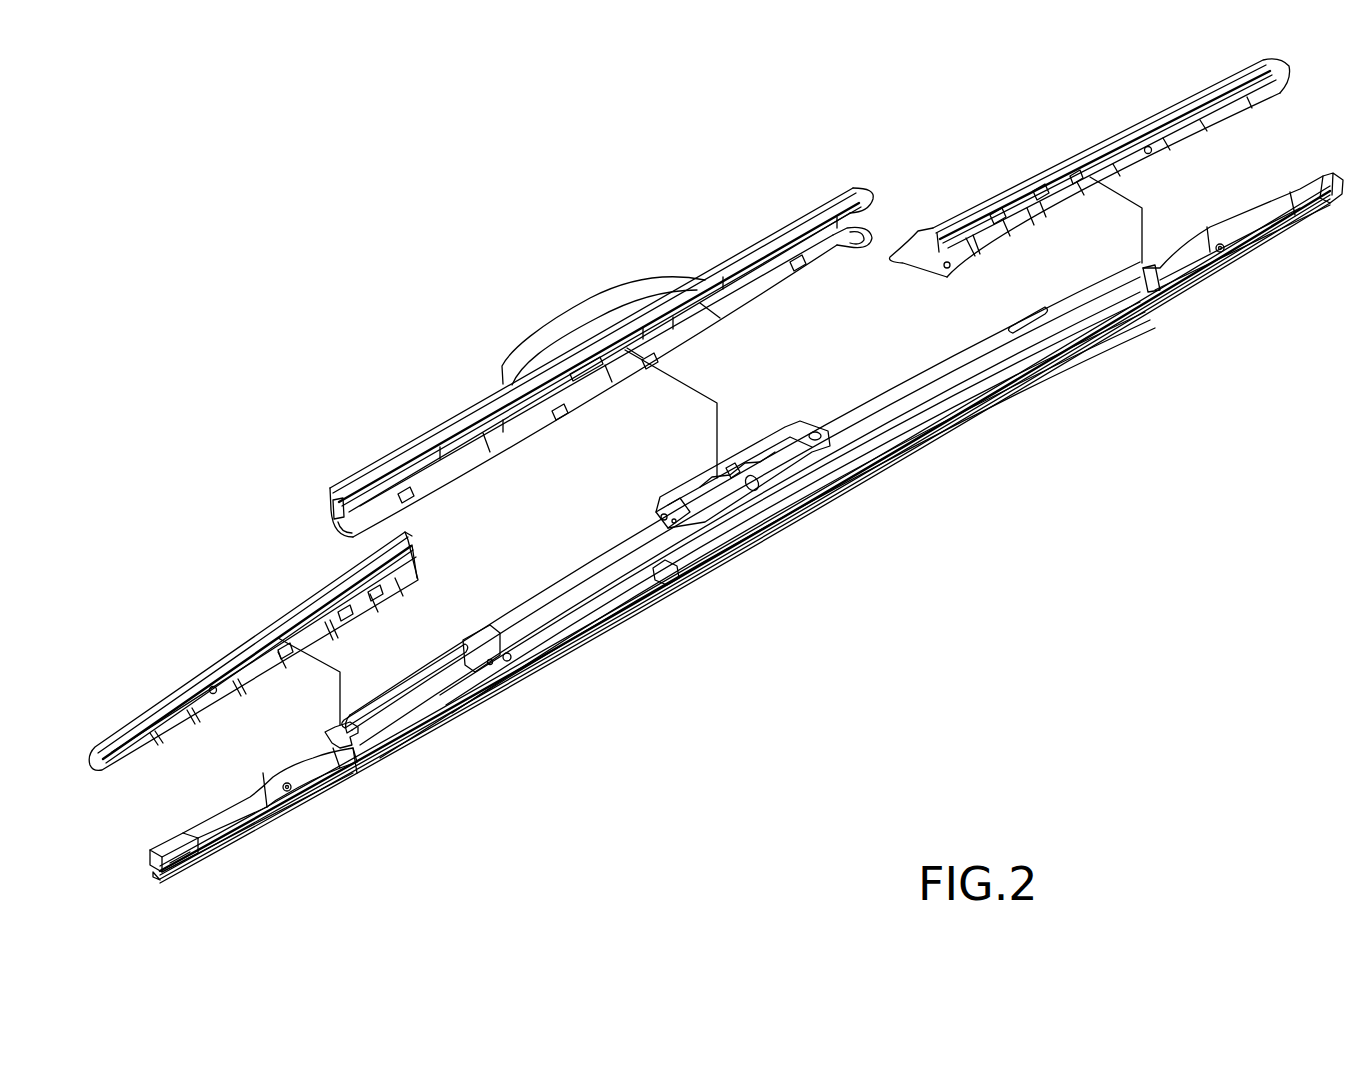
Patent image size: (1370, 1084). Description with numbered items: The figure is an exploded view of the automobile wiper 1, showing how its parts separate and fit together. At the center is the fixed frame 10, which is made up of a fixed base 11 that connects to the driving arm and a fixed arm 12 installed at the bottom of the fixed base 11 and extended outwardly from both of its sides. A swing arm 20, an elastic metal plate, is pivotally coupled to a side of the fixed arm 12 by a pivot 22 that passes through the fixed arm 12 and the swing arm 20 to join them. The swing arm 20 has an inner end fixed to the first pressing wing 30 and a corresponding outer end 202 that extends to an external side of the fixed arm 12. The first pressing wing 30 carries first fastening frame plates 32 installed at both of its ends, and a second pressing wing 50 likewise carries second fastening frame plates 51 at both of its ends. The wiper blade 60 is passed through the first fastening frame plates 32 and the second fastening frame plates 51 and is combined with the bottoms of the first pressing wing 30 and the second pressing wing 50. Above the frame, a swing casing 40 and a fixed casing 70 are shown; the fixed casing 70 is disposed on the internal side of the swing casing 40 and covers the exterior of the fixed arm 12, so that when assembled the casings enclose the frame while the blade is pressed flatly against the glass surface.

The automobile wiper 1 is at (723, 74).
The fixed frame 10 is at (697, 467).
The fixed base 11 is at (767, 478).
The fixed arm 12 is at (585, 565).
The swing arm 20 is at (417, 708).
The pivot 22 is at (527, 658).
The first pressing wing 30 is at (600, 620).
The first fastening frame plates 32 is at (683, 568).
The swing casing 40 is at (235, 640).
The second pressing wing 50 is at (240, 793).
The second fastening frame plates 51 is at (357, 767).
The wiper blade 60 is at (922, 445).
The fixed casing 70 is at (442, 413).
The outer end 202 is at (340, 722).